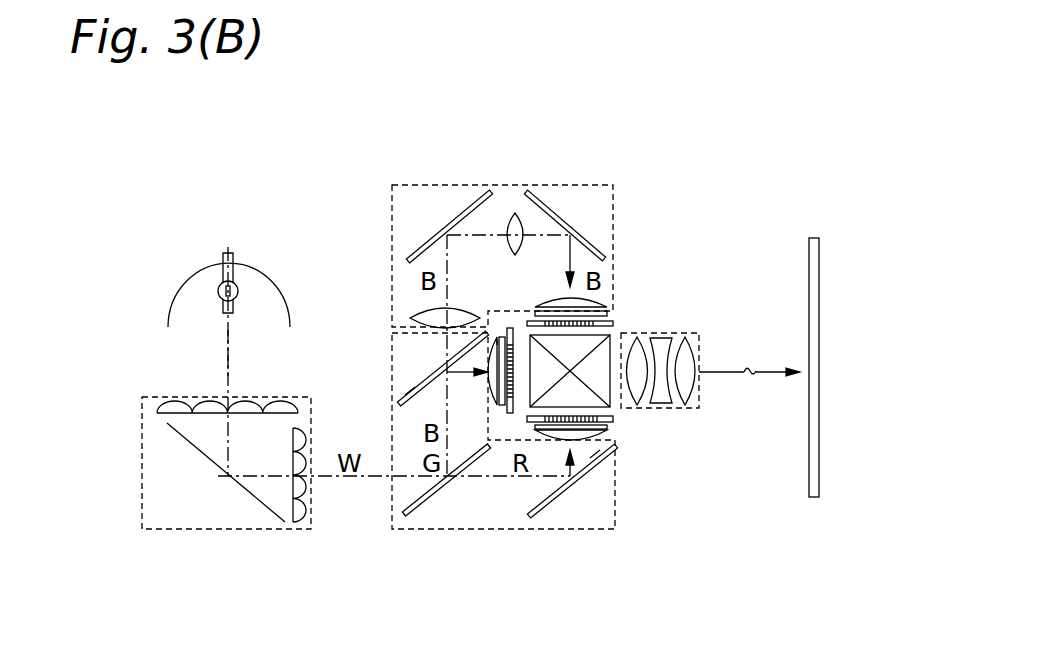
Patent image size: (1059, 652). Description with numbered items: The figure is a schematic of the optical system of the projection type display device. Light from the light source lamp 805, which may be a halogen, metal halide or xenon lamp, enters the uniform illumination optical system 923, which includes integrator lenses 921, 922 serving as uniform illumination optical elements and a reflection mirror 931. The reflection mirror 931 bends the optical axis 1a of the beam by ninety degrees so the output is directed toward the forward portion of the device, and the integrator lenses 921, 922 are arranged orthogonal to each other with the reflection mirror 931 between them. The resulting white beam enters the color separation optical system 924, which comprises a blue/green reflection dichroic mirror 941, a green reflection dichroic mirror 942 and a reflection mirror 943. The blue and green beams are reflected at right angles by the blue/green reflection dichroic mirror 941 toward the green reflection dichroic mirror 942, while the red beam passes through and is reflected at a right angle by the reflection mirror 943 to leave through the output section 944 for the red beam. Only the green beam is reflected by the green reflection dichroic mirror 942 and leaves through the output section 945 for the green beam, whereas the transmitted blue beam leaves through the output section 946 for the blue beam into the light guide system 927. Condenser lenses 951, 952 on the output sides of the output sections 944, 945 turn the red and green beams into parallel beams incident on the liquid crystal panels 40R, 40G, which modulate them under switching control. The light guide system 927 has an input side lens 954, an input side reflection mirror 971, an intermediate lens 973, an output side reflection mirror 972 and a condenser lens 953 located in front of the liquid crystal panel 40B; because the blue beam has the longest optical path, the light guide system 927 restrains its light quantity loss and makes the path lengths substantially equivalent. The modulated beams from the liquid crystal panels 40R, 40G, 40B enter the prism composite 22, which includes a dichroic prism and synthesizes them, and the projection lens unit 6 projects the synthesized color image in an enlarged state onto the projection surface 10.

The light source lamp 805 is at (183, 290).
The optical axis 1a is at (227, 378).
The integrator lens 921 is at (157, 412).
The integrator lens 922 is at (285, 527).
The uniform illumination optical system 923 is at (143, 482).
The reflection mirror 931 is at (253, 498).
The light guide system 927 is at (412, 185).
The input side reflection mirror 971 is at (423, 242).
The output side reflection mirror 972 is at (567, 220).
The intermediate lens 973 is at (513, 213).
The input side lens 954 is at (420, 307).
The condenser lens 952 is at (493, 333).
The condenser lens 953 is at (607, 297).
The condenser lens 951 is at (608, 428).
The liquid crystal panel 40G is at (508, 333).
The liquid crystal panel 40B is at (607, 325).
The liquid crystal panel 40R is at (613, 420).
The prism composite 22 is at (598, 340).
The projection lens unit 6 is at (699, 348).
The projection surface 10 is at (819, 255).
The color separation optical system 924 is at (616, 520).
The output section for the blue beam 946 is at (447, 335).
The green reflection dichroic mirror 942 is at (410, 388).
The output section for the green beam 945 is at (487, 373).
The output section for the red beam 944 is at (595, 453).
The blue/green reflection dichroic mirror 941 is at (418, 503).
The reflection mirror 943 is at (550, 500).